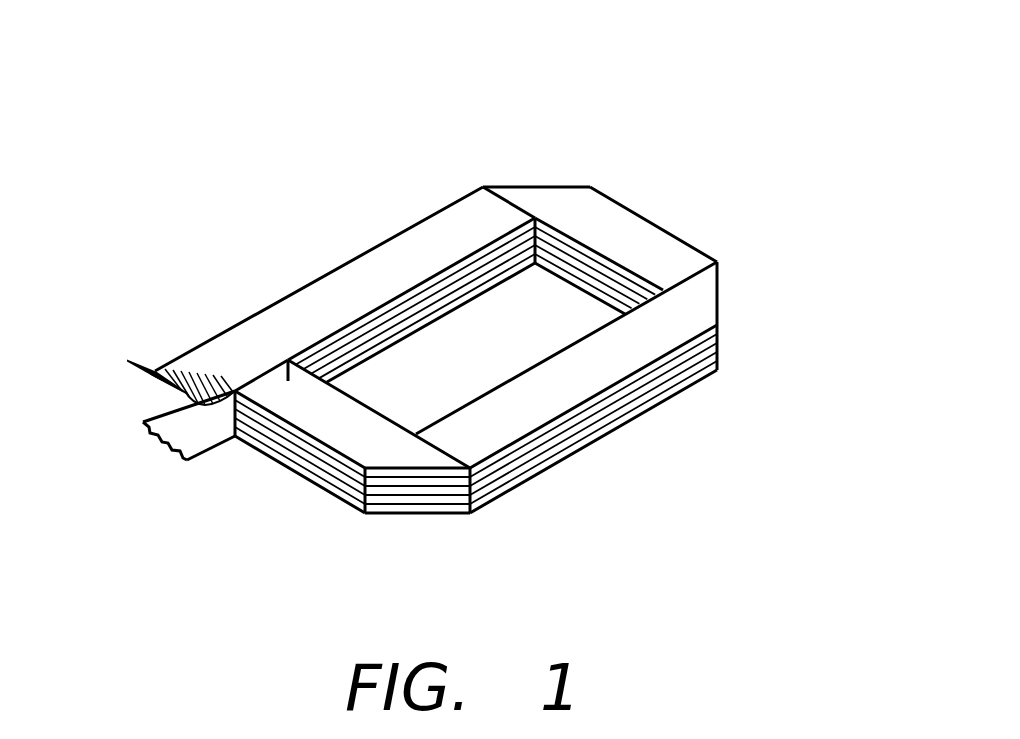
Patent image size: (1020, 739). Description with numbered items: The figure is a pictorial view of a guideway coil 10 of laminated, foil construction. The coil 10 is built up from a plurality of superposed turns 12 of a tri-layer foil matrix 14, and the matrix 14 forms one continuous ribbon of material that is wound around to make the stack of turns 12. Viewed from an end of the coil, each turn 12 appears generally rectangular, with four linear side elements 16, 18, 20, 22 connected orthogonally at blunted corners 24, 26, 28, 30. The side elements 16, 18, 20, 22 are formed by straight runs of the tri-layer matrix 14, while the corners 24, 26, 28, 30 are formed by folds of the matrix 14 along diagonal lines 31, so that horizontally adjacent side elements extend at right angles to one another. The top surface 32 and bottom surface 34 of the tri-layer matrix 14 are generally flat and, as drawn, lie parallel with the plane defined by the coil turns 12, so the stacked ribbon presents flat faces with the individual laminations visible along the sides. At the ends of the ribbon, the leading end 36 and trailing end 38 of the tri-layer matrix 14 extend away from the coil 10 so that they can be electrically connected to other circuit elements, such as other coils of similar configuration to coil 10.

The guideway coil 10 is at (670, 158).
The turns 12 is at (722, 367).
The tri-layer foil matrix 14 is at (192, 368).
The side element 16 is at (348, 272).
The side element 18 is at (703, 262).
The side element 20 is at (562, 390).
The side element 22 is at (348, 447).
The blunted corner 24 is at (520, 190).
The blunted corner 26 is at (712, 306).
The blunted corner 28 is at (400, 453).
The blunted corner 30 is at (232, 437).
The diagonal lines 31 is at (722, 350).
The top surface 32 is at (203, 433).
The bottom surface 34 is at (137, 397).
The leading end 36 is at (177, 453).
The trailing end 38 is at (145, 360).